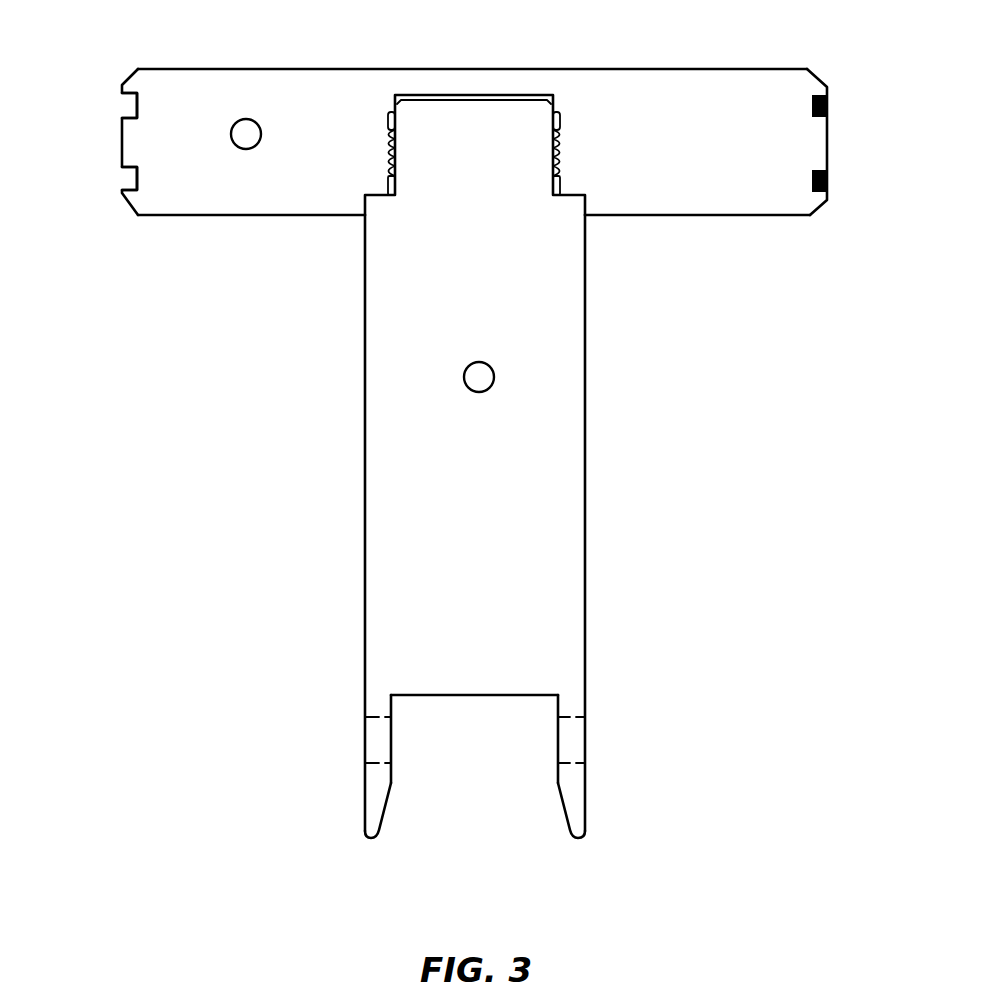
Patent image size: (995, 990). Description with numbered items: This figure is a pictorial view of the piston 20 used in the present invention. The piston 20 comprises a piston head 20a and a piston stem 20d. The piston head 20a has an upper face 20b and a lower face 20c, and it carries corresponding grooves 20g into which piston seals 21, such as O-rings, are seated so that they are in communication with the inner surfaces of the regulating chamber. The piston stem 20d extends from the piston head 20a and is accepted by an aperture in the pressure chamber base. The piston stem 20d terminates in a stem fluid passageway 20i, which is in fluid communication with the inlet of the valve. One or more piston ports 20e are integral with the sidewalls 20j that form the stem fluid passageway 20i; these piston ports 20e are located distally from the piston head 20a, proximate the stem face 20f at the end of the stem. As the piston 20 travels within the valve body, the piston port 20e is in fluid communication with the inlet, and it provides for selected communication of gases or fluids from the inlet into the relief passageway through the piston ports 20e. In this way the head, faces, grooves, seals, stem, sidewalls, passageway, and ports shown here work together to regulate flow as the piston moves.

The piston 20 is at (133, 394).
The piston head 20a is at (732, 118).
The upper face 20b is at (479, 48).
The lower face 20c is at (475, 237).
The piston stem 20d is at (520, 523).
The piston port 20e is at (521, 740).
The stem face 20f is at (474, 718).
The grooves 20g is at (87, 133).
The stem fluid passageway 20i is at (474, 787).
The sidewalls 20j is at (473, 807).
The piston seals 21 is at (855, 139).